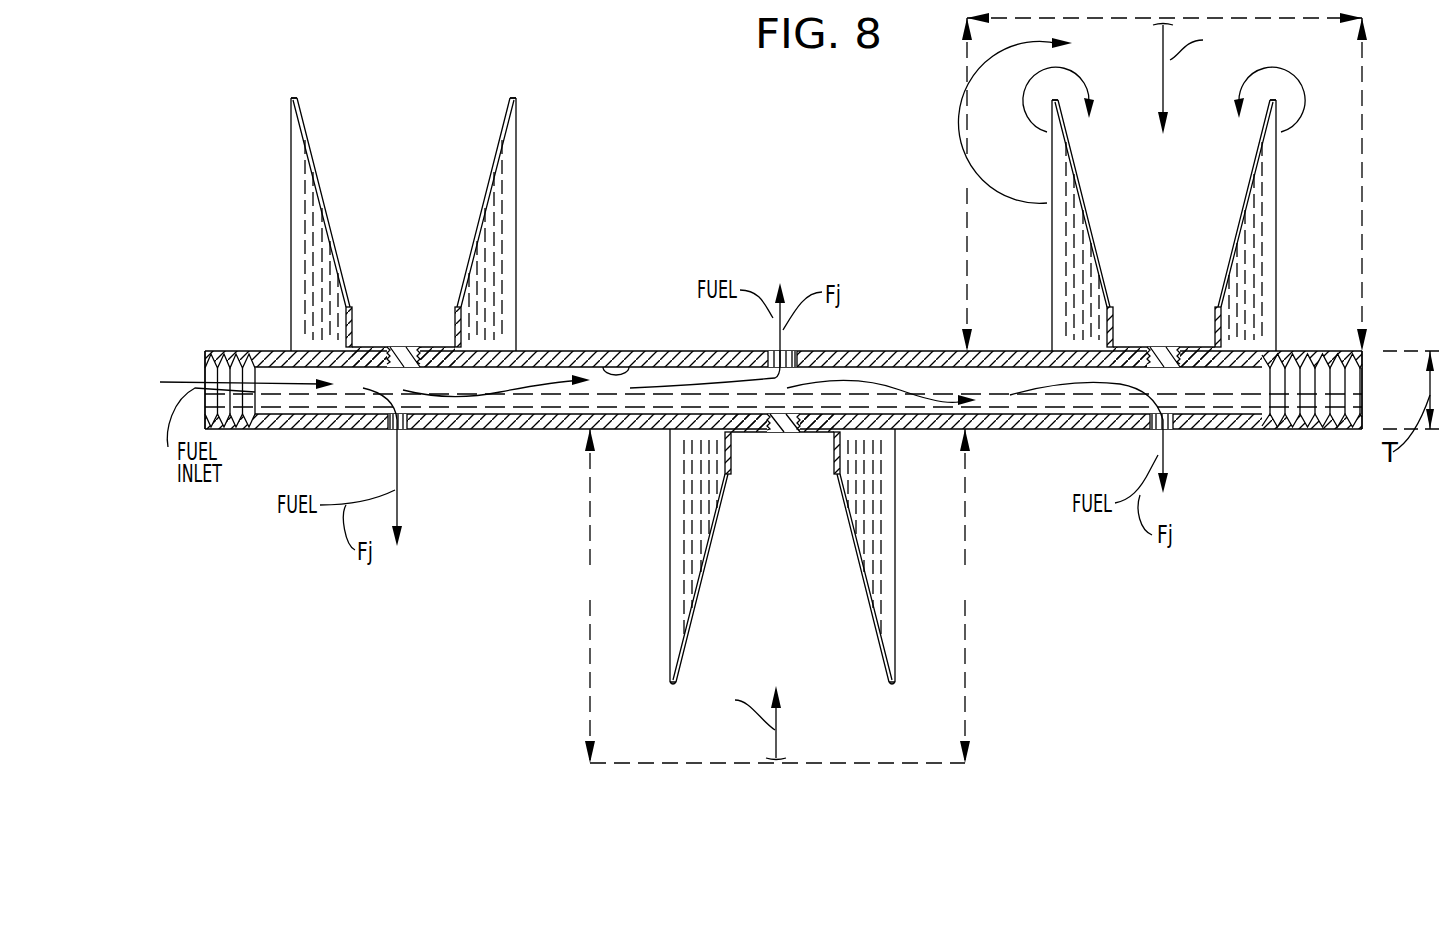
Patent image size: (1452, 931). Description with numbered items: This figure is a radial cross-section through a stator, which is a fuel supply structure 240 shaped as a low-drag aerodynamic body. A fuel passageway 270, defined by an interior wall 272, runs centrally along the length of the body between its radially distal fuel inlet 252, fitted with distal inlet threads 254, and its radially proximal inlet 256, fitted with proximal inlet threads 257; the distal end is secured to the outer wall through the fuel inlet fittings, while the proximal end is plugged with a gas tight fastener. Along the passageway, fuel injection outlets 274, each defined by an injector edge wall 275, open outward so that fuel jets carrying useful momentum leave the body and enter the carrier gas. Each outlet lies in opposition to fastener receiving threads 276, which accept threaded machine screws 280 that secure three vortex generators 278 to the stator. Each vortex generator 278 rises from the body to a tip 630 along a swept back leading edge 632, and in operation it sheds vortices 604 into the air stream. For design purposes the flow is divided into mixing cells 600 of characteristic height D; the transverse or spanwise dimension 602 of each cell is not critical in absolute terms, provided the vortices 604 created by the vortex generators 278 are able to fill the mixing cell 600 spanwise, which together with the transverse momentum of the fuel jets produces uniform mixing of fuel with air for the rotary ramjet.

The fuel supply structure 240 is at (812, 168).
The radially distal fuel inlet 252 is at (207, 352).
The distal inlet threads 254 is at (212, 368).
The radially proximal inlet 256 is at (1363, 357).
The proximal inlet threads 257 is at (1362, 385).
The fuel passageway 270 is at (1006, 394).
The interior wall 272 is at (630, 367).
The fuel injection outlets 274 is at (768, 352).
The injector edge wall 275 is at (795, 351).
The fastener receiving threads 276 is at (415, 362).
The vortex generator 278 is at (517, 192).
The threaded machine screw 280 is at (400, 347).
The mixing cell 600 is at (1362, 50).
The transverse or spanwise dimension 602 is at (1140, 18).
The vortices 604 is at (990, 80).
The tip 630 is at (293, 98).
The swept back leading edge 632 is at (326, 202).